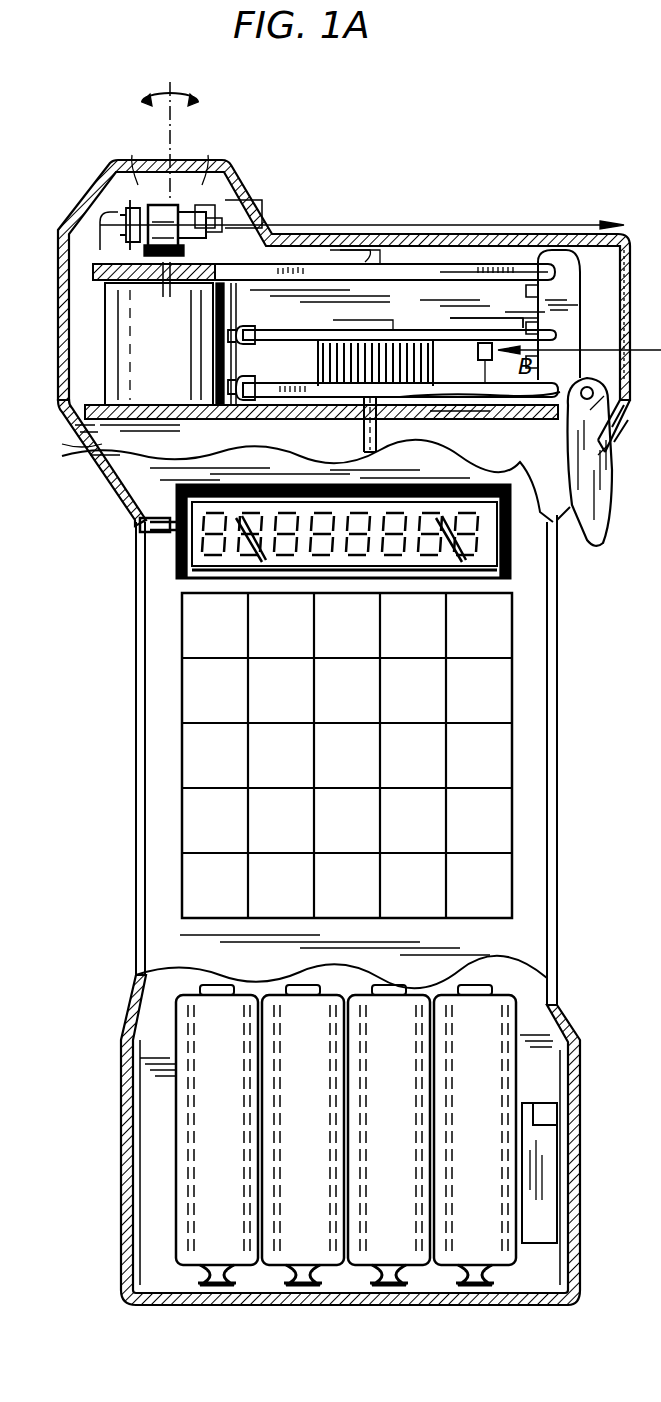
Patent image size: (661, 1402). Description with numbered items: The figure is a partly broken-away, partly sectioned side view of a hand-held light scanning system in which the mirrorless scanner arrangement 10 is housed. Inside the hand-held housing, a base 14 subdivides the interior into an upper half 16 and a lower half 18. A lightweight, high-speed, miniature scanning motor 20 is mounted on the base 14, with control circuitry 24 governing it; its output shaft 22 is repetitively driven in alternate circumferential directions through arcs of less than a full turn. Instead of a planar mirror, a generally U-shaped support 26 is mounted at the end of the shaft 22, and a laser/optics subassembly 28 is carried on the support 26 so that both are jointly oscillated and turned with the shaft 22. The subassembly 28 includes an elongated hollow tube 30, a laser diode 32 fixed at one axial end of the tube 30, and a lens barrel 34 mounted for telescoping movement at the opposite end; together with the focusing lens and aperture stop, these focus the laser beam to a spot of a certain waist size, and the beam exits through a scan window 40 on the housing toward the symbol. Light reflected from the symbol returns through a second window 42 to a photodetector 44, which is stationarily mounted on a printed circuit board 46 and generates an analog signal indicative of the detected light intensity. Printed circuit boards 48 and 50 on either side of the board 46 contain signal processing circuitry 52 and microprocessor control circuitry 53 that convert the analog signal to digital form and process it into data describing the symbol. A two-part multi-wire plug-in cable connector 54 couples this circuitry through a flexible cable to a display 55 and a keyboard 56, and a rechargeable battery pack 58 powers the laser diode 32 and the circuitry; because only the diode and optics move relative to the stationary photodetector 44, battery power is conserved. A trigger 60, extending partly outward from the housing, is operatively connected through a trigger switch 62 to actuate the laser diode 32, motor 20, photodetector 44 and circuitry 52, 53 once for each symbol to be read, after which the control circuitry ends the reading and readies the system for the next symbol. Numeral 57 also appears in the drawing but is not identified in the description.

The arrangement 10 is at (498, 165).
The base 14 is at (95, 448).
The upper half 16 is at (96, 205).
The lower half 18 is at (135, 1030).
The scanning motor 20 is at (122, 346).
The output shaft 22 is at (166, 286).
The control circuitry 24 is at (368, 262).
The U-shaped support 26 is at (196, 254).
The laser/optics subassembly 28 is at (187, 190).
The hollow tube 30 is at (152, 197).
The laser diode 32 is at (133, 203).
The lens barrel 34 is at (213, 207).
The scan window 40 is at (252, 210).
The second window 42 is at (625, 313).
The photodetector 44 is at (470, 428).
The printed circuit board 46 is at (283, 338).
The printed circuit board 48 is at (458, 268).
The printed circuit board 50 is at (308, 382).
The signal processing circuitry 52 is at (354, 322).
The microprocessor control circuitry 53 is at (497, 306).
The plug-in cable connector 54 is at (466, 363).
The display 55 is at (182, 545).
The keyboard 56 is at (497, 753).
The housing side 57 is at (654, 707).
The rechargeable battery pack 58 is at (493, 1022).
The trigger 60 is at (600, 538).
The trigger switch 62 is at (428, 403).